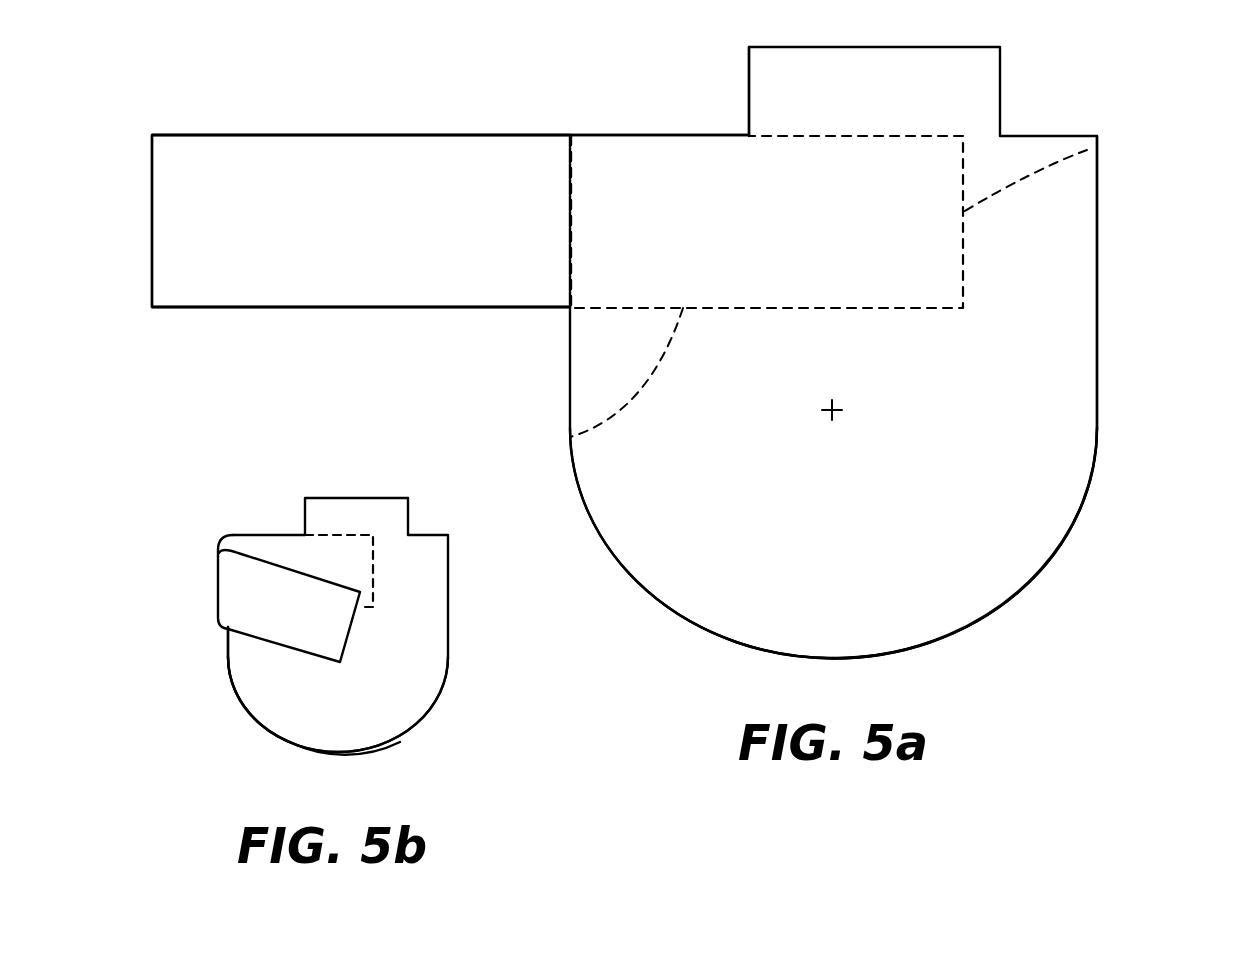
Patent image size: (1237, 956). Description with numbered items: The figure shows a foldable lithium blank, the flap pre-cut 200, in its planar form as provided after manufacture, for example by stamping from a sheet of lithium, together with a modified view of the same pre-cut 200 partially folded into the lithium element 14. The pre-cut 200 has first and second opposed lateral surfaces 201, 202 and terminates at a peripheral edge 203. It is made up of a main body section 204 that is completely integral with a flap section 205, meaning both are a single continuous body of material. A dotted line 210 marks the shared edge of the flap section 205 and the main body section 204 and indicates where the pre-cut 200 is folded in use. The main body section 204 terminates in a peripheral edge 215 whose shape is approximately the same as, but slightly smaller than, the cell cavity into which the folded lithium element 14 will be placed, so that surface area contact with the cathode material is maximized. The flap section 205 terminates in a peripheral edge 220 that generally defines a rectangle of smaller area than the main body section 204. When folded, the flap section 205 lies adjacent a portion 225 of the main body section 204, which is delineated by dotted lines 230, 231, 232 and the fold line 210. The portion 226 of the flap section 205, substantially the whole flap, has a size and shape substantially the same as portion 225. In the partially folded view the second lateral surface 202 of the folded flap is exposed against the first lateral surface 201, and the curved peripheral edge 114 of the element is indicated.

In FIG. 5b, the folded lithium element 14 is at (228, 658).
In FIG. 5a, the curved bottom edge 114 is at (1097, 300).
In FIG. 5b, the curved bottom edge 114 is at (362, 750).
In FIG. 5a, the flap pre-cut 200 is at (1047, 88).
In FIG. 5b, the flap pre-cut 200 is at (238, 522).
In FIG. 5a, the first lateral surface 201 is at (786, 541).
In FIG. 5b, the first lateral surface 201 is at (428, 666).
In FIG. 5b, the second lateral surface 202 is at (316, 616).
In FIG. 5a, the peripheral edge 203 is at (691, 618).
In FIG. 5b, the peripheral edge 203 is at (247, 708).
In FIG. 5a, the main body section 204 is at (1090, 464).
In FIG. 5a, the flap section 205 is at (348, 133).
In FIG. 5a, the dotted line 210 is at (571, 213).
In FIG. 5a, the peripheral edge of main body section 215 is at (975, 614).
In FIG. 5a, the peripheral edge of flap section 220 is at (217, 308).
In FIG. 5a, the portion of main body section 225 is at (725, 225).
In FIG. 5b, the portion of main body section 225 is at (332, 560).
In FIG. 5a, the portion of flap section 226 is at (382, 231).
In FIG. 5a, the dotted line 230 is at (817, 127).
In FIG. 5a, the dotted line 231 is at (1097, 147).
In FIG. 5a, the dotted line 232 is at (570, 437).